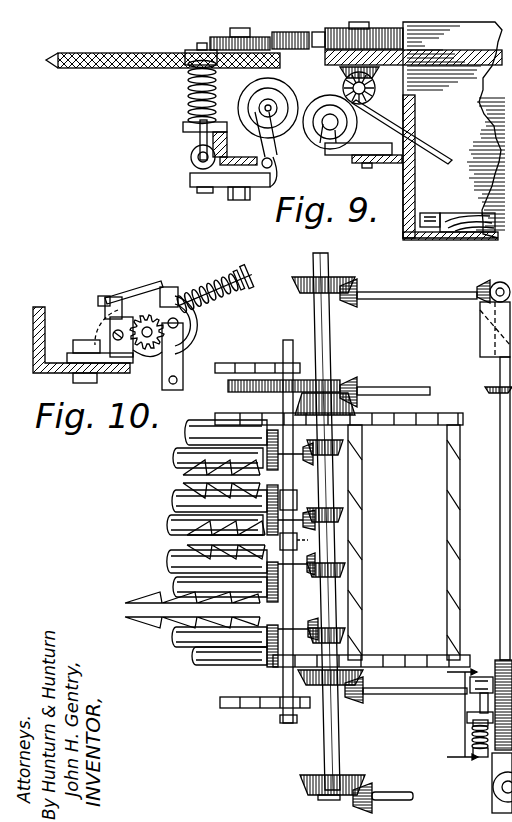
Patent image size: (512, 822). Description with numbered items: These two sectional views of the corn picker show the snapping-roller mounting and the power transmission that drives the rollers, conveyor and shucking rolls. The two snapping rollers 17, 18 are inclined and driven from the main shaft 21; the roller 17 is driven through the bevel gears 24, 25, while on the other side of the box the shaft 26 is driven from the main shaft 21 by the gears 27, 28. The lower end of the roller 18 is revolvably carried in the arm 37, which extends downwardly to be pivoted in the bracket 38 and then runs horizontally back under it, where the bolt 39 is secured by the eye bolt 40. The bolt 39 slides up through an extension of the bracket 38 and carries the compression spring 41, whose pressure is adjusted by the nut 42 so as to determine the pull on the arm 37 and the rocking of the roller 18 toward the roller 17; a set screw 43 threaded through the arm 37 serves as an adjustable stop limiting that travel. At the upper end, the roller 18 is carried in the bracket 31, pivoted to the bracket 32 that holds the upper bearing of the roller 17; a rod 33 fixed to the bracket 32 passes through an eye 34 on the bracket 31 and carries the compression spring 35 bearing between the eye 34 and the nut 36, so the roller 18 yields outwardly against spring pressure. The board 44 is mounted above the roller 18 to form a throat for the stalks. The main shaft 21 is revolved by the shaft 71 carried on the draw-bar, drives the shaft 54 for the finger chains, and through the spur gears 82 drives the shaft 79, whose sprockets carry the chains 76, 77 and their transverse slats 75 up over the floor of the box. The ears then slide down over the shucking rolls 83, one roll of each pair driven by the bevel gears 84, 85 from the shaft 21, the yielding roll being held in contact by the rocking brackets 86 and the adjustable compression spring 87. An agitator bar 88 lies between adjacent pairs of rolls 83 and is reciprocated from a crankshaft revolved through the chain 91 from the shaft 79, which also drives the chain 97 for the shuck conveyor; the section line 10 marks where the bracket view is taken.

In FIG. 10, the section line 10 is at (454, 715).
In FIG. 9, the snapping roller 17 is at (316, 145).
In FIG. 10, the snapping roller 17 is at (128, 317).
In FIG. 9, the snapping roller 18 is at (292, 132).
In FIG. 10, the snapping roller 18 is at (188, 338).
In FIG. 10, the main shaft 21 is at (328, 333).
In FIG. 10, the bevel gear 24 is at (365, 700).
In FIG. 10, the bevel gear 25 is at (365, 673).
In FIG. 10, the shaft 26 is at (409, 393).
In FIG. 10, the gear 27 is at (357, 382).
In FIG. 10, the gear 28 is at (357, 407).
In FIG. 10, the bracket 31 is at (183, 358).
In FIG. 10, the bracket 32 is at (140, 363).
In FIG. 10, the rod 33 is at (130, 307).
In FIG. 10, the eye 34 is at (173, 290).
In FIG. 10, the compression spring 35 is at (212, 277).
In FIG. 10, the nut 36 is at (483, 768).
In FIG. 9, the arm 37 is at (191, 180).
In FIG. 9, the bracket 38 is at (240, 137).
In FIG. 9, the bolt 39 is at (200, 138).
In FIG. 9, the eye bolt 40 is at (191, 157).
In FIG. 9, the compression spring 41 is at (192, 105).
In FIG. 9, the nut 42 is at (190, 58).
In FIG. 9, the set screw 43 is at (233, 200).
In FIG. 9, the board 44 is at (84, 68).
In FIG. 10, the shaft 54 is at (418, 293).
In FIG. 10, the shaft 71 is at (395, 797).
In FIG. 10, the transverse slat 75 is at (362, 553).
In FIG. 10, the chain 76 is at (420, 425).
In FIG. 10, the chain 77 is at (428, 658).
In FIG. 10, the shaft 79 is at (283, 403).
In FIG. 10, the spur gear 82 is at (300, 378).
In FIG. 10, the shucking roll 83 is at (187, 430).
In FIG. 10, the bevel gear 84 is at (343, 445).
In FIG. 10, the bevel gear 85 is at (343, 460).
In FIG. 10, the rocking bracket 86 is at (292, 492).
In FIG. 10, the adjustable compression spring 87 is at (293, 541).
In FIG. 10, the agitator bar 88 is at (187, 477).
In FIG. 10, the chain 91 is at (233, 708).
In FIG. 10, the chain 97 is at (257, 360).